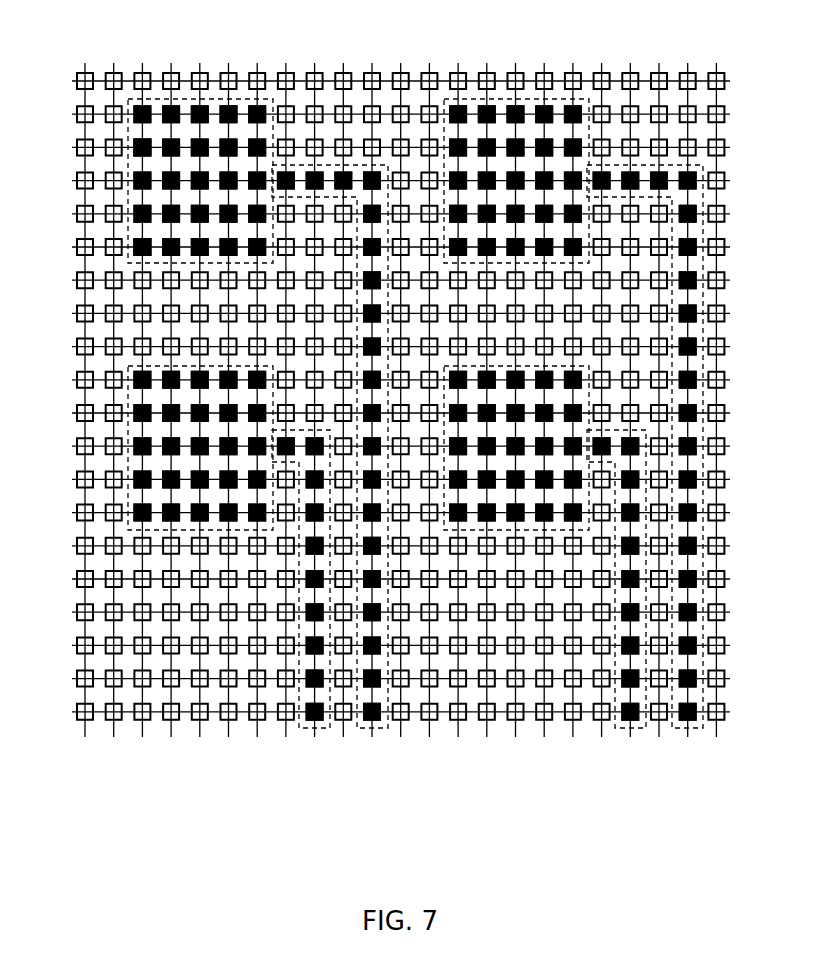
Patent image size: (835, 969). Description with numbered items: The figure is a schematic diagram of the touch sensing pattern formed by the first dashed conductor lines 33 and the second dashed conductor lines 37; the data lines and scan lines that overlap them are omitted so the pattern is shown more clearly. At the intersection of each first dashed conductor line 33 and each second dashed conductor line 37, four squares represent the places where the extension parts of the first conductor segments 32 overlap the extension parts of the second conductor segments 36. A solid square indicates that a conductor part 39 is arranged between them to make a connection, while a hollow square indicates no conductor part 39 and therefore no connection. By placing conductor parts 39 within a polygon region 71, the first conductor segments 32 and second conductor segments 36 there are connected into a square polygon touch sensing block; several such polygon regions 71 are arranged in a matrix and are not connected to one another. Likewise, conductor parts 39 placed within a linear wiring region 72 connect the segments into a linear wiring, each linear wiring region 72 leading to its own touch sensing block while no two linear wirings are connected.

The first conductor segment 32 is at (188, 110).
The first dashed conductor line 33 is at (72, 116).
The second conductor segment 36 is at (378, 198).
The second dashed conductor line 37 is at (144, 70).
The conductor part 39 is at (143, 242).
The polygon region 71 is at (527, 100).
The linear wiring region 72 is at (310, 733).